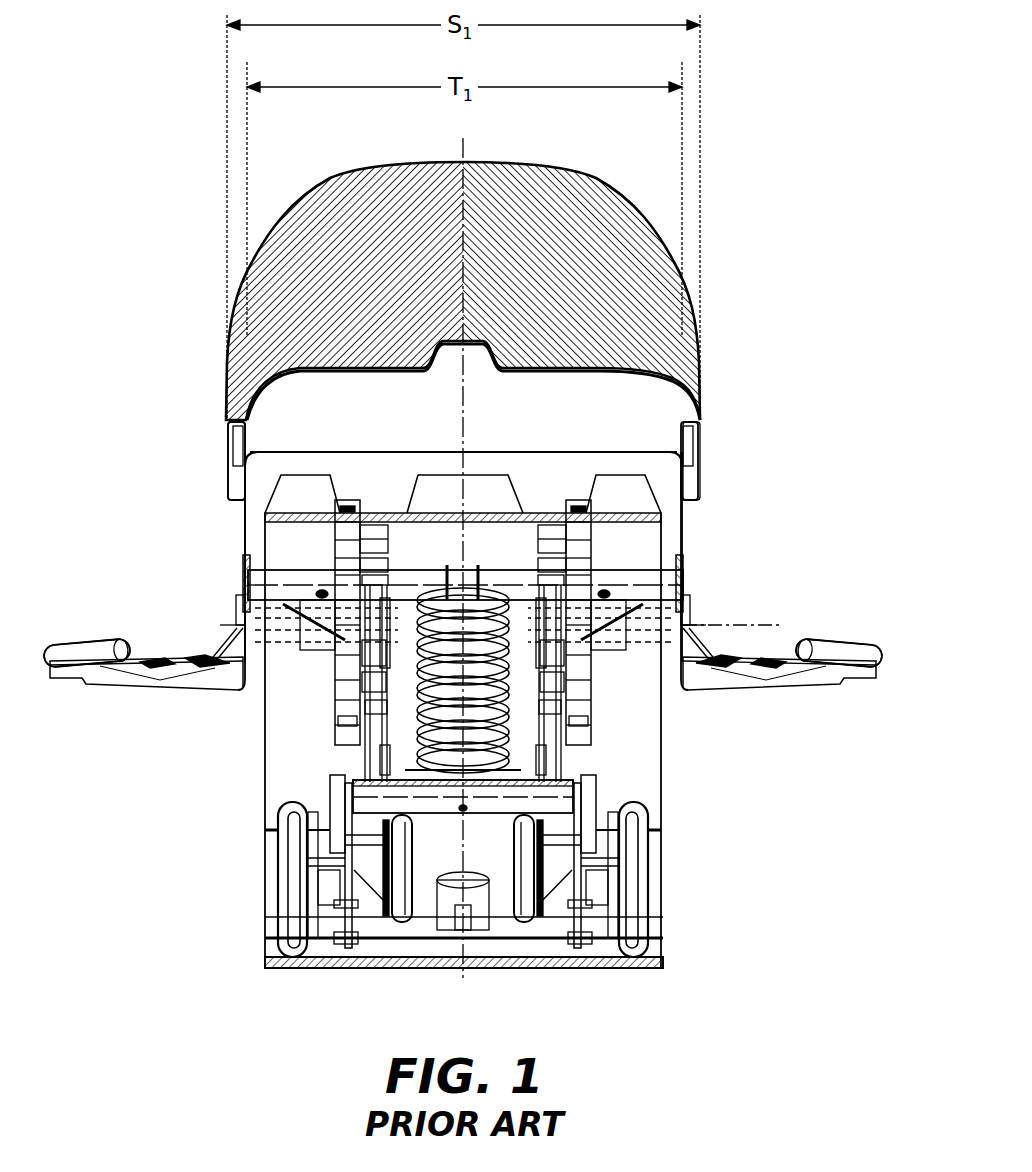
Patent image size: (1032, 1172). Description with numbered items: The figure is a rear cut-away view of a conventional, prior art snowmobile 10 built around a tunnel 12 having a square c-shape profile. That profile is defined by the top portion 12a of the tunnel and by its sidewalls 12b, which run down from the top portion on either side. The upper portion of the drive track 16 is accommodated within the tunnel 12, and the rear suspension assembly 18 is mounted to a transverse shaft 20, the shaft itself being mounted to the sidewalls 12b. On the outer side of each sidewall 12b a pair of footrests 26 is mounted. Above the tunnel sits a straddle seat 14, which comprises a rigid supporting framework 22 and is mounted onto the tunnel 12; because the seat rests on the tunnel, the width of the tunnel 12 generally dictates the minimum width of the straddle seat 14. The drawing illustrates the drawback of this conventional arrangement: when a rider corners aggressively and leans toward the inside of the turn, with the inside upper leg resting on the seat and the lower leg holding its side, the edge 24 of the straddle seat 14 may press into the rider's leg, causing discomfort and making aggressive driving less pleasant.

The seat assembly 10 is at (766, 493).
The tunnel 12 is at (524, 448).
The top portion 12a is at (322, 450).
The sidewalls 12b is at (233, 526).
The straddle seat 14 is at (690, 358).
The drive track 16 is at (638, 968).
The rear suspension assembly 18 is at (336, 751).
The transverse shaft 20 is at (686, 582).
The rigid supporting framework 22 is at (585, 373).
The edge 24 is at (236, 462).
The footrests 26 is at (852, 645).